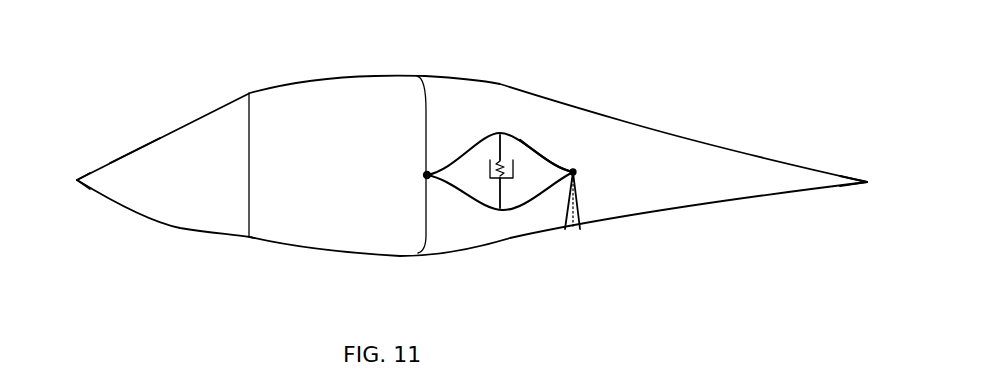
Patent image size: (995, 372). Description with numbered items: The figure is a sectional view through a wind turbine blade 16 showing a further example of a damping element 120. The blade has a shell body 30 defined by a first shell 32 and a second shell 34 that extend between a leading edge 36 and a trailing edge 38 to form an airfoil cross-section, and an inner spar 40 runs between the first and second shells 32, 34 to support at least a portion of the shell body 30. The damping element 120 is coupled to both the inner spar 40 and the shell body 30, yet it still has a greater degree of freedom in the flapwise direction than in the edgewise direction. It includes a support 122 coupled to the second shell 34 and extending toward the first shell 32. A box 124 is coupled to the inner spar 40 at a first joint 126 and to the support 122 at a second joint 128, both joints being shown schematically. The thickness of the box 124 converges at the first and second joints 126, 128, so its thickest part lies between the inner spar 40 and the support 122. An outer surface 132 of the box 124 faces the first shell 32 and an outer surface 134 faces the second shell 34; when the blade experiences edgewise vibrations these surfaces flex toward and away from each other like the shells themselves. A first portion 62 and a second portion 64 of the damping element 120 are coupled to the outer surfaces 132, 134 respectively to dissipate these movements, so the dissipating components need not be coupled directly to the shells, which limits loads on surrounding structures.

The airfoil / rotor blade 16 is at (110, 50).
The shell body 30 is at (124, 150).
The first shell 32 is at (182, 122).
The second shell 34 is at (179, 228).
The leading edge 36 is at (73, 182).
The trailing edge 38 is at (866, 181).
The inner spar 40 is at (247, 163).
The first portion 62 is at (503, 150).
The second portion 64 is at (504, 210).
The damping element 120 is at (472, 128).
The support 122 is at (582, 208).
The box 124 is at (543, 152).
The first joint 126 is at (424, 175).
The second joint 128 is at (574, 172).
The outer surface 132 is at (457, 160).
The outer surface 134 is at (457, 190).